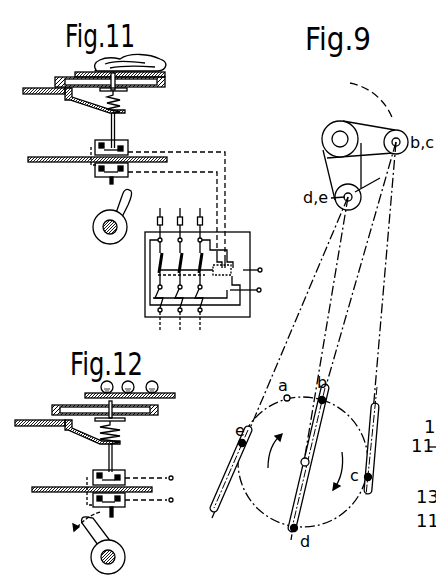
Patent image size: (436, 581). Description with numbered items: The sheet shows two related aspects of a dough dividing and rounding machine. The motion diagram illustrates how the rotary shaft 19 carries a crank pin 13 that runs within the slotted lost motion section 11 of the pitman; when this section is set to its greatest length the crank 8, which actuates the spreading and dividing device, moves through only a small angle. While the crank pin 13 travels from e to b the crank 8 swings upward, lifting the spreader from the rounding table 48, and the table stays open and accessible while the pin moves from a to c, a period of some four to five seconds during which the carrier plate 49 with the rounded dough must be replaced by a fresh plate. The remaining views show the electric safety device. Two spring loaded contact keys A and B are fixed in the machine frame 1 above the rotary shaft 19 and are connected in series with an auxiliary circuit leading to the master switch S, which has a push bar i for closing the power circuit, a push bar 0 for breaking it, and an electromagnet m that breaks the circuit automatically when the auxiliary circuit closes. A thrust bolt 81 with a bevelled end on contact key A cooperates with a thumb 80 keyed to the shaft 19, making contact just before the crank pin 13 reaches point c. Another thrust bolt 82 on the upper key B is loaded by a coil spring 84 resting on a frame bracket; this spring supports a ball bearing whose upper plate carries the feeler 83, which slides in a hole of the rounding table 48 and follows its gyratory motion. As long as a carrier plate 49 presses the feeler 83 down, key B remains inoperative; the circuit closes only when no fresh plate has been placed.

In FIG. 11, the machine frame 1 is at (45, 95).
In FIG. 12, the machine frame 1 is at (30, 424).
In FIG. 9, the crank 8 is at (370, 126).
In FIG. 9, the lost motion section 11 is at (231, 471).
In FIG. 9, the crank pin 13 is at (327, 400).
In FIG. 11, the rotary shaft 19 is at (103, 229).
In FIG. 12, the rotary shaft 19 is at (116, 557).
In FIG. 11, the rounding table 48 is at (165, 82).
In FIG. 12, the rounding table 48 is at (158, 411).
In FIG. 11, the carrier plate 49 is at (166, 69).
In FIG. 12, the carrier plate 49 is at (175, 395).
In FIG. 11, the thumb 80 is at (120, 205).
In FIG. 12, the thumb 80 is at (93, 539).
In FIG. 11, the thrust bolt 81 is at (110, 182).
In FIG. 12, the thrust bolt 81 is at (115, 512).
In FIG. 11, the thrust bolt 82 is at (116, 132).
In FIG. 12, the thrust bolt 82 is at (113, 456).
In FIG. 11, the feeler 83 is at (127, 90).
In FIG. 12, the feeler 83 is at (125, 421).
In FIG. 11, the coil spring 84 is at (120, 103).
In FIG. 12, the coil spring 84 is at (120, 437).
In FIG. 11, the contact key A is at (95, 177).
In FIG. 12, the contact key A is at (93, 504).
In FIG. 11, the contact key B is at (100, 140).
In FIG. 12, the contact key B is at (95, 483).
In FIG. 11, the master switch S is at (145, 265).
In FIG. 11, the electromagnet m is at (240, 267).
In FIG. 11, the push bar i is at (258, 268).
In FIG. 11, the push bar 0 is at (257, 292).